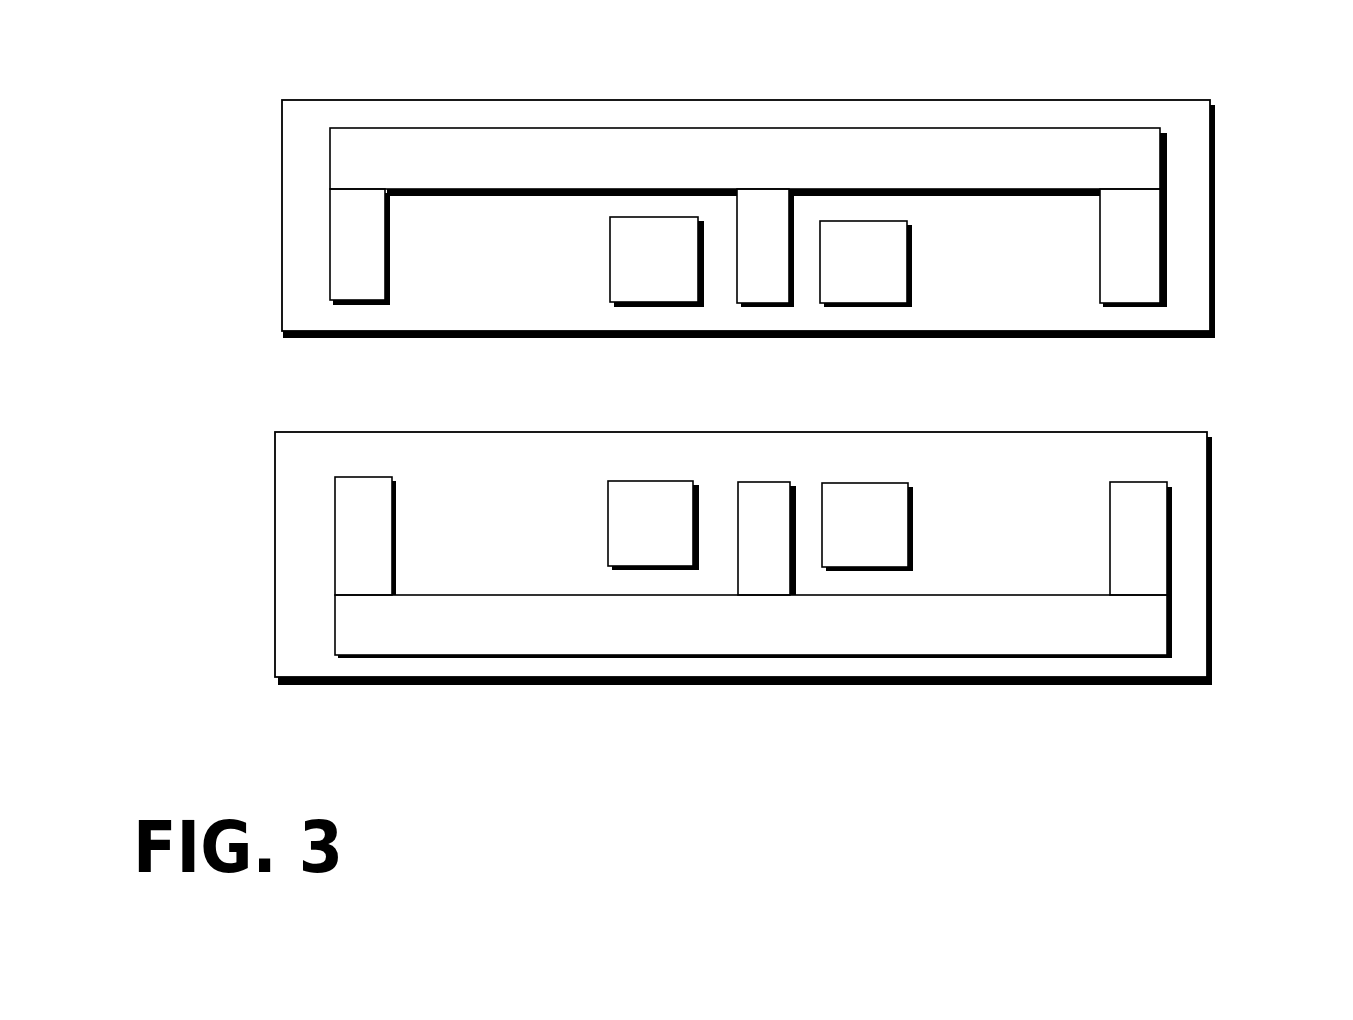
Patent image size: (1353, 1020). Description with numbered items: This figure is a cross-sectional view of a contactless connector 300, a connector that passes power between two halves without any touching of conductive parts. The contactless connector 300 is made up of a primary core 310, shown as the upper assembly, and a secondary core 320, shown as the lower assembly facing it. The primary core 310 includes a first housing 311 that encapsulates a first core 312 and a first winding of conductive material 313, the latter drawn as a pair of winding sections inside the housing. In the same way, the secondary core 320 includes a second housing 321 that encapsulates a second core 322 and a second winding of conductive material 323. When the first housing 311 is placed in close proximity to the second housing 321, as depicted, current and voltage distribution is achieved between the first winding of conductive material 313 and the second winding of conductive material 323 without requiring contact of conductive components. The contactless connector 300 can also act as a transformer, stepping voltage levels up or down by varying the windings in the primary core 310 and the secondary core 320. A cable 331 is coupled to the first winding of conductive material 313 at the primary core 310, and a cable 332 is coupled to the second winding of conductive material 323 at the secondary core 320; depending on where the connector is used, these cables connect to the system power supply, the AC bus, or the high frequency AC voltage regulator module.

The contactless connector 300 is at (668, 760).
The primary core 310 is at (762, 207).
The first housing 311 is at (292, 273).
The first core 312 is at (363, 287).
The first winding of conductive material 313 is at (877, 293).
The secondary core 320 is at (760, 578).
The second housing 321 is at (300, 568).
The second core 322 is at (375, 515).
The second winding of conductive material 323 is at (875, 500).
The cable 331 is at (662, 217).
The cable 332 is at (875, 570).